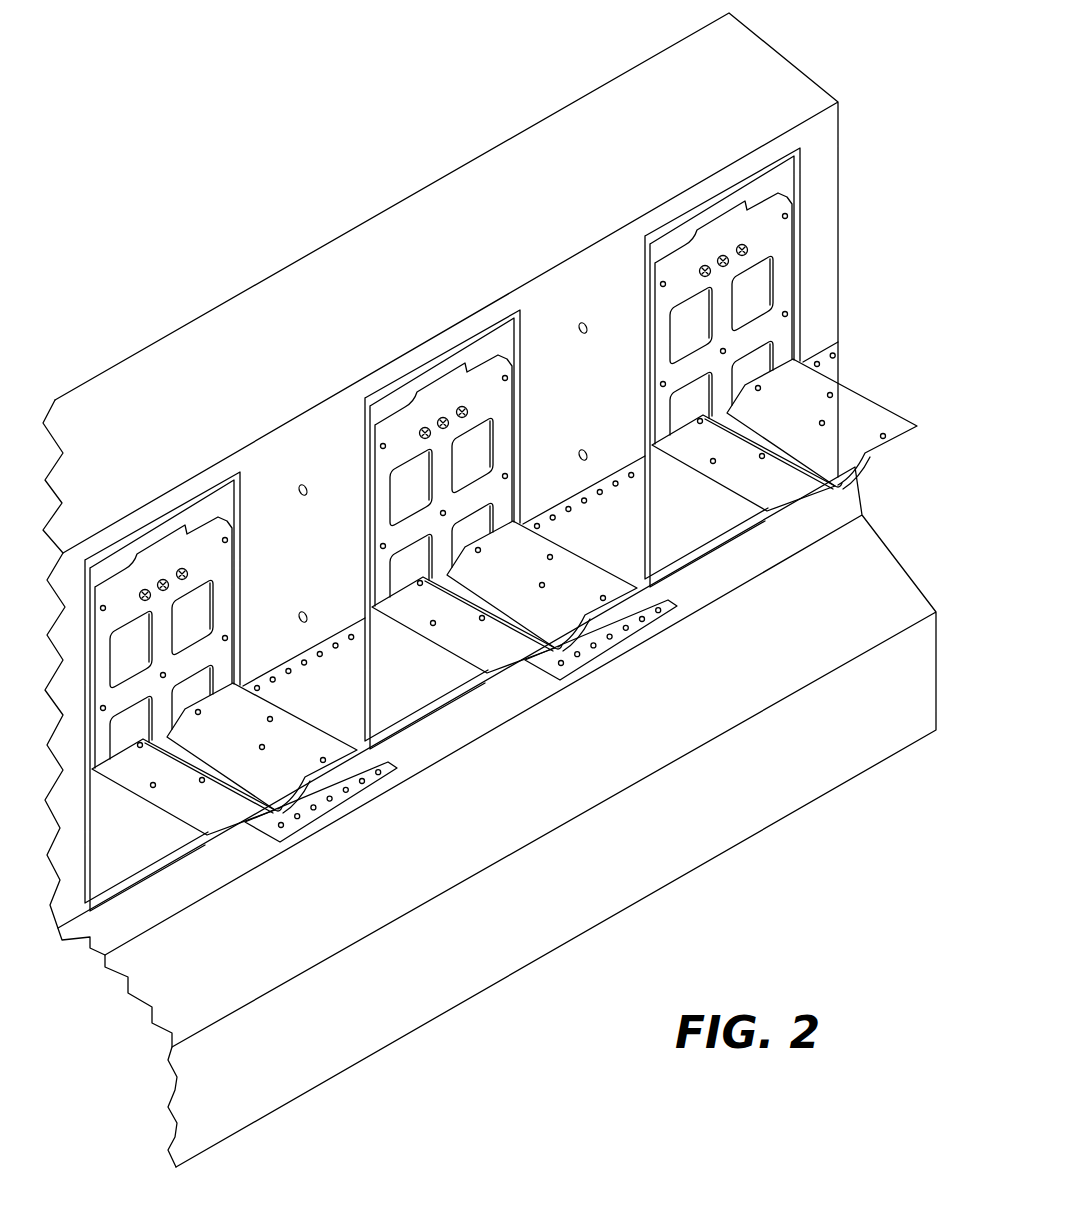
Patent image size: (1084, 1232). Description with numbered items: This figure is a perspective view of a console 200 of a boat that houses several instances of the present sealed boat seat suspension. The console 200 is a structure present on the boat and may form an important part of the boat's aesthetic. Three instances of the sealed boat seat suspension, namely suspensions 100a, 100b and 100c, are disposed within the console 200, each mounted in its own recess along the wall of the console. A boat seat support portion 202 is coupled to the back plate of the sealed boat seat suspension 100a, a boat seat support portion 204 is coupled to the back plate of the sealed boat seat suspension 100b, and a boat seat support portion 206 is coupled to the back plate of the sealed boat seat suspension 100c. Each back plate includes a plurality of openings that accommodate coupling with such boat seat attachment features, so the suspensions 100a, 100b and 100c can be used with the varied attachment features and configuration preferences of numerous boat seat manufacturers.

The console 200 is at (278, 243).
The sealed boat seat suspension 100a is at (165, 578).
The sealed boat seat suspension 100b is at (445, 420).
The sealed boat seat suspension 100c is at (723, 258).
The boat seat support portion 202 is at (225, 830).
The boat seat support portion 204 is at (505, 665).
The boat seat support portion 206 is at (790, 500).